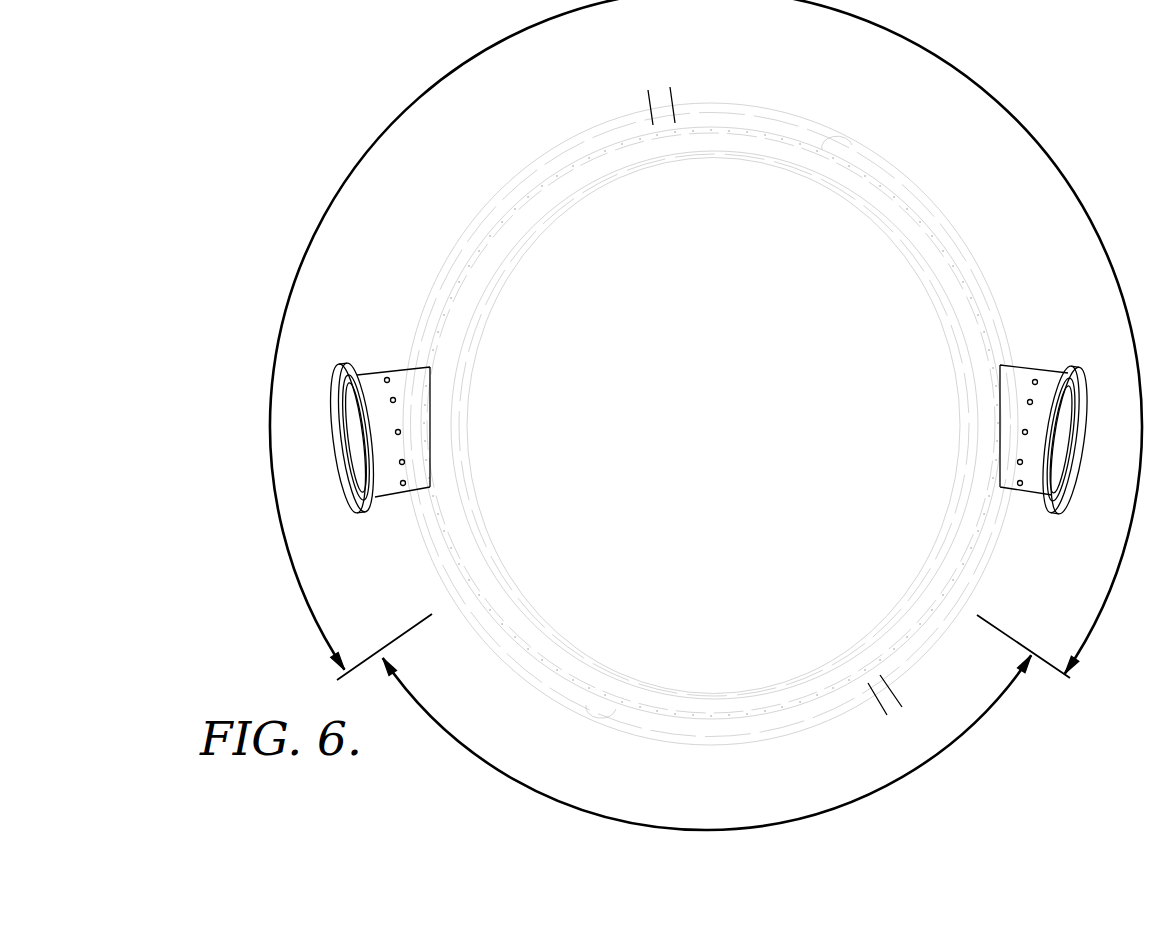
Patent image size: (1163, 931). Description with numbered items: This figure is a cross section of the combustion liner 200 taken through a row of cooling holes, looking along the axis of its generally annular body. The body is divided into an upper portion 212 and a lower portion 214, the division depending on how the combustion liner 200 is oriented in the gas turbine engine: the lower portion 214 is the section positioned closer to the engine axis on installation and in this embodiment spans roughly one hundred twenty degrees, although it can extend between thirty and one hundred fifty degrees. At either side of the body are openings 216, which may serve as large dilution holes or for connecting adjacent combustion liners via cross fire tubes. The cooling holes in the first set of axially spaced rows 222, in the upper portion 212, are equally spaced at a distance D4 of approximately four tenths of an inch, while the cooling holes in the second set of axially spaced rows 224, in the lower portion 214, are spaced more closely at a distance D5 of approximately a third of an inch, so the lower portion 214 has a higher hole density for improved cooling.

The combustion liner 200 is at (224, 126).
The upper portion 212 is at (400, 114).
The lower portion 214 is at (905, 777).
The openings 216 is at (348, 440).
The first set of axially spaced rows 222 is at (716, 126).
The second set of axially spaced rows 224 is at (768, 717).
The spacing distance D4 is at (710, 92).
The spacing distance D5 is at (850, 727).